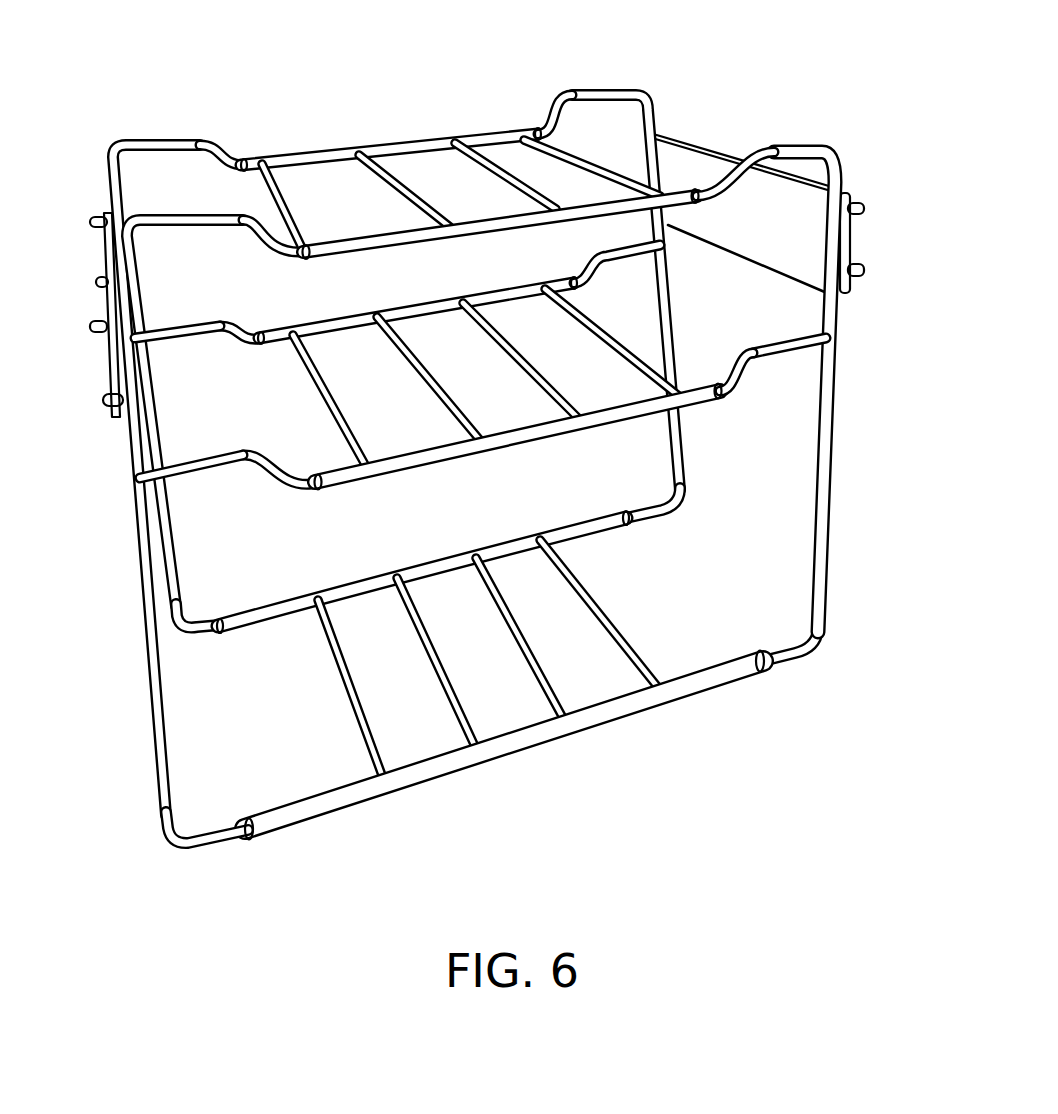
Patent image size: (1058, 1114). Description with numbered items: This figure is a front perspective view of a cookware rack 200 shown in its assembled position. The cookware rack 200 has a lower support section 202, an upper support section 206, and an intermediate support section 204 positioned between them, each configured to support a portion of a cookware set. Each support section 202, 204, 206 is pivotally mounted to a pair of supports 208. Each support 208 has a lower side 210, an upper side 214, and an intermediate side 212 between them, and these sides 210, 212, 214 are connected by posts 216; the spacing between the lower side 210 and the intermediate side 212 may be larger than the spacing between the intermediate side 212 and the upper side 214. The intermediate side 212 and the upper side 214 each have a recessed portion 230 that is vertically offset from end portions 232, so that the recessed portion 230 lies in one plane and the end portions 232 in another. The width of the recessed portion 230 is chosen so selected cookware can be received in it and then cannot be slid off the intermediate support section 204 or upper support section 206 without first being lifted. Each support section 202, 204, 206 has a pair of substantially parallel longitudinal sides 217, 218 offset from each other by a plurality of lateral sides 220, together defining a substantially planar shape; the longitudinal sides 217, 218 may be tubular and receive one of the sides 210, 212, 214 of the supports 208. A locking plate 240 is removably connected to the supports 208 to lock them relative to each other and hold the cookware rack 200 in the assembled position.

The cookware rack 200 is at (500, 452).
The lower support section 202 is at (798, 686).
The intermediate support section 204 is at (532, 269).
The upper support section 206 is at (452, 104).
The support 208 is at (749, 378).
The lower side 210 is at (230, 838).
The intermediate side 212 is at (787, 341).
The upper side 214 is at (173, 223).
The post 216 is at (829, 463).
The longitudinal side 217 is at (393, 240).
The longitudinal side 218 is at (320, 155).
The lateral side 220 is at (388, 182).
The recessed portion 230 is at (281, 253).
The end portion 232 is at (209, 463).
The locking plate 240 is at (858, 227).